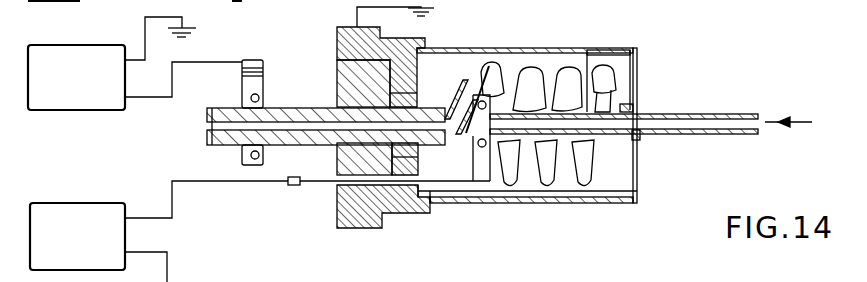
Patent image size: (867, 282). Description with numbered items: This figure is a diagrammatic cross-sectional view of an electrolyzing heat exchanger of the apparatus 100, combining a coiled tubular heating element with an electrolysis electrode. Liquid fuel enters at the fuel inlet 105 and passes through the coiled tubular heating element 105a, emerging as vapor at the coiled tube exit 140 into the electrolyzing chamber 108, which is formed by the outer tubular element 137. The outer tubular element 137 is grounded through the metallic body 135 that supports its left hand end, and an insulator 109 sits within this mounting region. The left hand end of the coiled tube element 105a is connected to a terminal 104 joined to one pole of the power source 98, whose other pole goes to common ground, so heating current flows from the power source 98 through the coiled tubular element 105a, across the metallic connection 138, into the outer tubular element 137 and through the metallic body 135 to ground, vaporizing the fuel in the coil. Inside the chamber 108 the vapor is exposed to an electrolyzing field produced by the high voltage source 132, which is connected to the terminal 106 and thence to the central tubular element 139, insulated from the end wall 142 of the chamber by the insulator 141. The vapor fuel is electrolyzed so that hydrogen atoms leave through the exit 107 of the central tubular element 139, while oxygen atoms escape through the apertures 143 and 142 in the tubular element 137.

The power source 98 is at (107, 44).
The plasma apparatus 100 is at (776, 5).
The terminal 104 is at (242, 86).
The fuel inlet 105 is at (207, 133).
The coiled tubular heating element 105a is at (500, 281).
The terminal 106 is at (286, 188).
The exit 107 is at (755, 124).
The electrolyzing chamber 108 is at (628, 175).
The insulator 109 is at (337, 80).
The high voltage source 132 is at (103, 191).
The metallic body 135 is at (337, 40).
The outer tubular element 137 is at (520, 204).
The metallic connection 138 is at (636, 62).
The central tubular element 139 is at (700, 135).
The coiled tube exit 140 is at (618, 94).
The insulator 141 is at (640, 108).
The end wall 142 is at (456, 204).
The apertures 143 is at (447, 48).